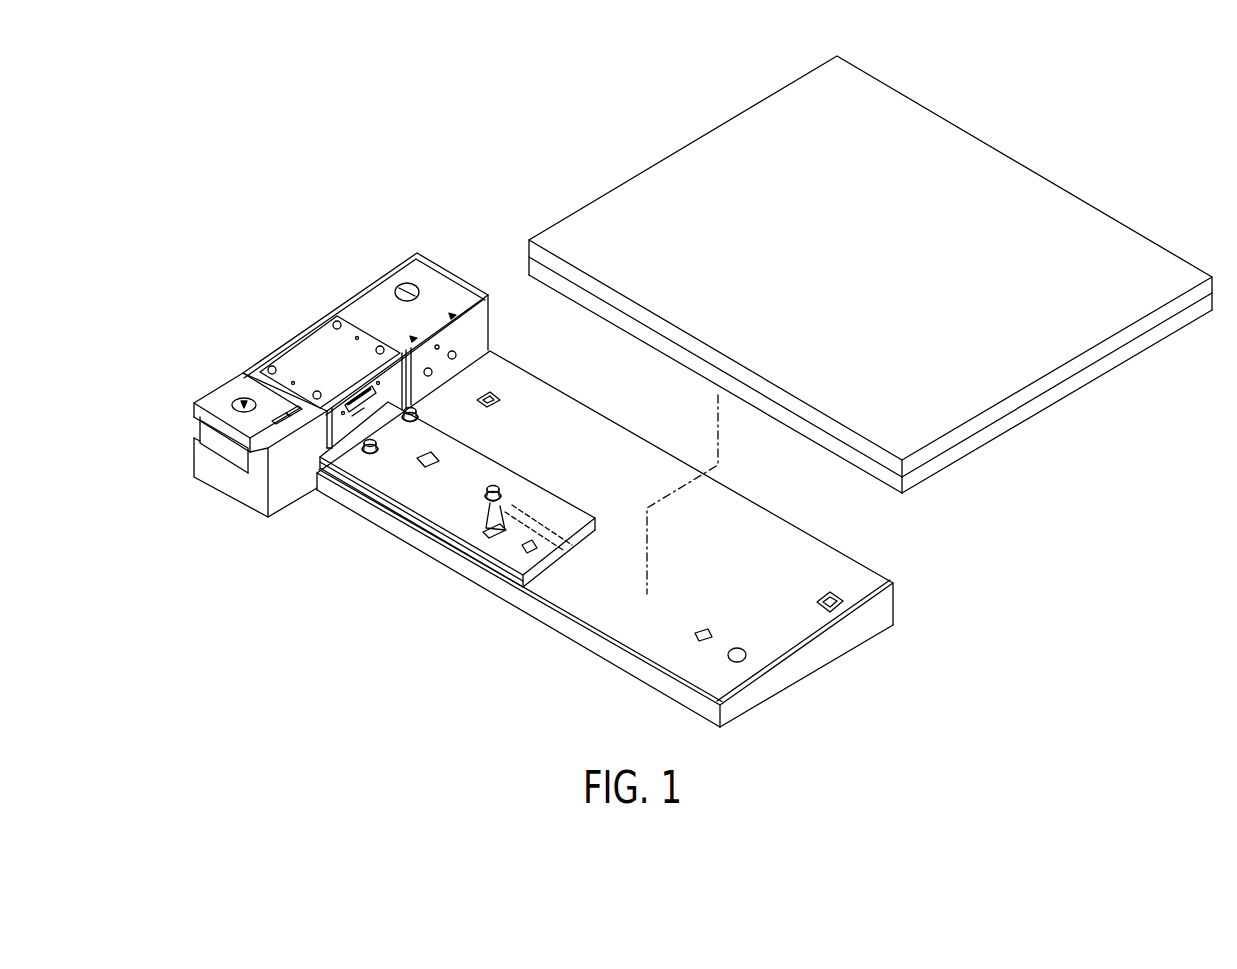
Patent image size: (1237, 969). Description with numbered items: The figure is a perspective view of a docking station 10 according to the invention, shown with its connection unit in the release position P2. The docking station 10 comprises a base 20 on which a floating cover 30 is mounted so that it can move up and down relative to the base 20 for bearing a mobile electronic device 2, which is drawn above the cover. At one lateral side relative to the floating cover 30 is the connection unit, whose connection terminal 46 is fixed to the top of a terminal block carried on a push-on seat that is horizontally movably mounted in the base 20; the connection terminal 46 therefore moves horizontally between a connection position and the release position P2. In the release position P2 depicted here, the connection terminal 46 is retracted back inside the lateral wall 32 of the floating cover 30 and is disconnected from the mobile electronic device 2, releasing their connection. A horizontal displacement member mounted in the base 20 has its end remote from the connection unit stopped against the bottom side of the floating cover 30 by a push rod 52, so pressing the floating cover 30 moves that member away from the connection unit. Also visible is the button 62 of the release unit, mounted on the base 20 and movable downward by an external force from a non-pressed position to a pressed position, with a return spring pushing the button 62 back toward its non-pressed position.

The mobile electronic device 2 is at (1077, 188).
The docking station 10 is at (472, 243).
The base 20 is at (733, 520).
The floating cover 30 is at (430, 502).
The lateral wall 32 is at (332, 427).
The connection terminal 46 is at (347, 405).
The push rod 52 is at (505, 538).
The button 62 is at (230, 392).
The release position P2 is at (358, 412).